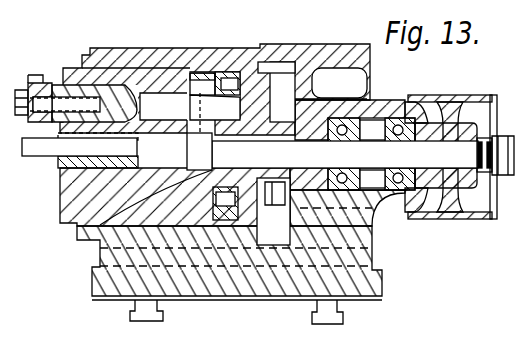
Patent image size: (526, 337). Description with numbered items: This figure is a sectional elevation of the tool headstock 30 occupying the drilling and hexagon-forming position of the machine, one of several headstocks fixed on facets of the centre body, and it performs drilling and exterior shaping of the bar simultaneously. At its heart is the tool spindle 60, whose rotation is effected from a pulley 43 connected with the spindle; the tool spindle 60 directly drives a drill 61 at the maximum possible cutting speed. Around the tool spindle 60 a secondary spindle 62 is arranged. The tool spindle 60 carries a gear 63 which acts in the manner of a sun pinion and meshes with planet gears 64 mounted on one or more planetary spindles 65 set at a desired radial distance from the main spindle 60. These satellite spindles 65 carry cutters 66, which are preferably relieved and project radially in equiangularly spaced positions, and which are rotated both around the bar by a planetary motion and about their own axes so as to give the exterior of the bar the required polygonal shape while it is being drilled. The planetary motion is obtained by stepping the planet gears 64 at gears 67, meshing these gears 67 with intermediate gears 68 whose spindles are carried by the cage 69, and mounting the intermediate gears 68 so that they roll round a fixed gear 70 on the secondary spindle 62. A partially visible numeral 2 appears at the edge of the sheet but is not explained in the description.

The tool headstock 30 is at (152, 58).
The pulley 43 is at (447, 96).
The tool spindle 60 is at (486, 140).
The drill 61 is at (44, 150).
The secondary spindle 62 is at (347, 98).
The gear 63 is at (100, 244).
The planet gears 64 is at (200, 72).
The planetary spindles 65 is at (137, 108).
The cutters 66 is at (37, 75).
The stepped gears 67 is at (226, 76).
The intermediate gears 68 is at (228, 220).
The cage 69 is at (283, 62).
The fixed gear 70 is at (305, 208).
The frame 2 is at (519, 238).